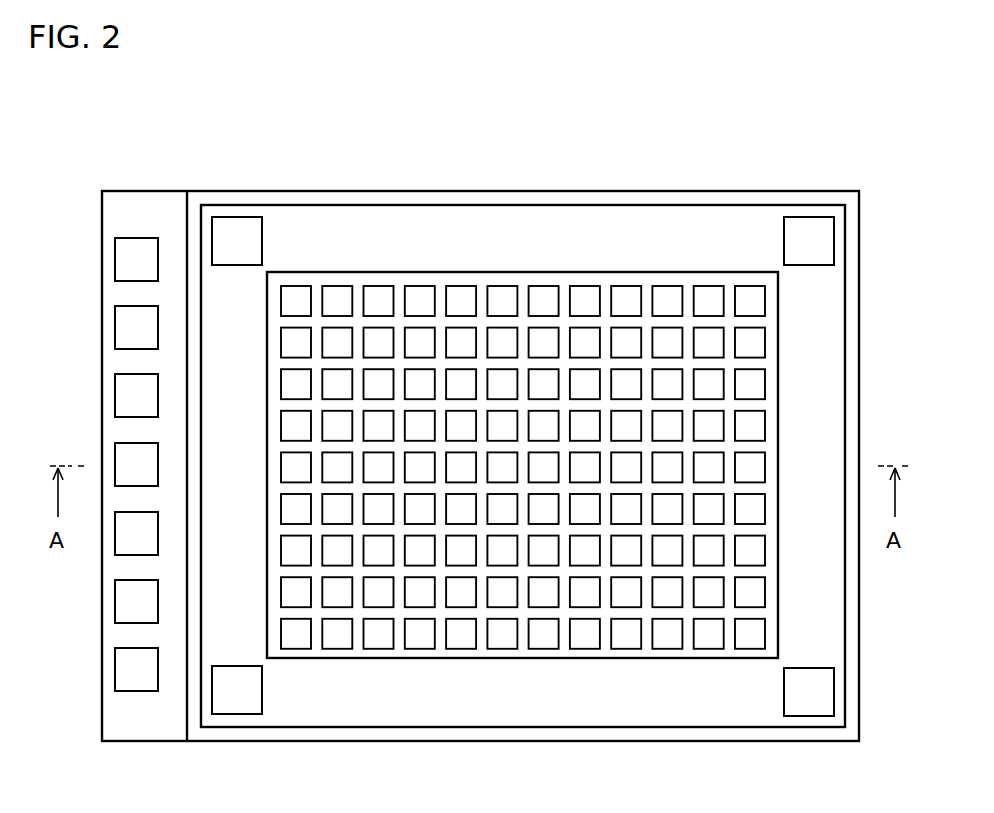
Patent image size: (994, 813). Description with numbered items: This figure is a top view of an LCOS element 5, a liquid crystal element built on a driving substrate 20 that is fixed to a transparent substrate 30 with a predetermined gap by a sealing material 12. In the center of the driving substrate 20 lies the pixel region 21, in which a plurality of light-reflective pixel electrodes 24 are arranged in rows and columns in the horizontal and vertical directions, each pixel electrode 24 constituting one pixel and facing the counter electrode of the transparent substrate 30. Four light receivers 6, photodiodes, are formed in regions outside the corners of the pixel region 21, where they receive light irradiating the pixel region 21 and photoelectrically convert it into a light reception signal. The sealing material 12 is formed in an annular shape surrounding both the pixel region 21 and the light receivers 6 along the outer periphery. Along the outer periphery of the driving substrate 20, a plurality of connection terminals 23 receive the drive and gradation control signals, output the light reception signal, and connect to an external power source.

The LCOS element 5 is at (828, 183).
The light receiver 6 is at (236, 217).
The sealing material 12 is at (492, 200).
The driving substrate 20 is at (143, 190).
The pixel region 21 is at (267, 333).
The connection terminal 23 is at (115, 259).
The pixel electrode 24 is at (379, 286).
The transparent substrate 30 is at (373, 191).